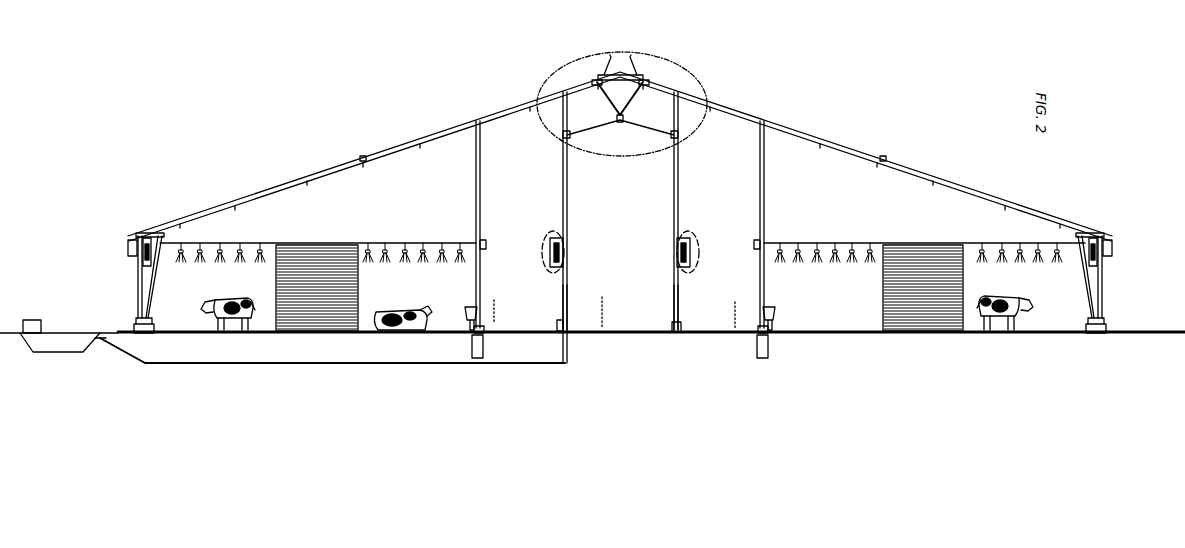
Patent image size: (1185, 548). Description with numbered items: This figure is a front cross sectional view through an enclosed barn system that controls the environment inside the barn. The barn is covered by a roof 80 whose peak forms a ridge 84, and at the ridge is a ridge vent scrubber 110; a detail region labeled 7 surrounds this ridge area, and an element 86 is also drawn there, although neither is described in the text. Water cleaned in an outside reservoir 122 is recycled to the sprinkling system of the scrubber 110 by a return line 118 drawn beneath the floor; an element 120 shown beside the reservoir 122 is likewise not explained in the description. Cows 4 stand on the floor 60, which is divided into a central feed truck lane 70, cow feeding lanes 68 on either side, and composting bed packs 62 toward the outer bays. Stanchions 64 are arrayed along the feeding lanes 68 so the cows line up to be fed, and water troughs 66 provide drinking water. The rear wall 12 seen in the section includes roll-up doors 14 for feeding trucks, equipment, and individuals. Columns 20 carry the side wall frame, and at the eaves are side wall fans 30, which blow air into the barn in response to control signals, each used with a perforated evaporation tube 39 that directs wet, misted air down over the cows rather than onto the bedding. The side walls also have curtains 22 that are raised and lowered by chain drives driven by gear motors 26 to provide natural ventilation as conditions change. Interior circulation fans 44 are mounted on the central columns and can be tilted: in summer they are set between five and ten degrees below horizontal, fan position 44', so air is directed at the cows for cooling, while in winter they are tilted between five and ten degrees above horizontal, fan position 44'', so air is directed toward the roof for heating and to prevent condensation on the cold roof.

The cows 4 is at (253, 333).
The detail region of ridge vent 7 is at (622, 104).
The rear wall 12 is at (368, 193).
The roll-up doors 14 is at (328, 317).
The columns 20 is at (562, 180).
The curtains 22 is at (132, 237).
The motors 26 is at (128, 245).
The side wall fans 30 is at (141, 258).
The evaporation tube 39 is at (390, 244).
The interior circulation fans 44 is at (607, 240).
The fan position 44' is at (622, 270).
The fan position 44'' is at (707, 220).
The floor 60 is at (401, 333).
The composting bed packs 62 is at (203, 332).
The stanchions 64 is at (568, 293).
The water troughs 66 is at (463, 317).
The cow feeding lanes 68 is at (625, 314).
The feed truck lane 70 is at (611, 312).
The roof 80 is at (440, 128).
The ridge 84 is at (620, 60).
The ridge cap 86 is at (633, 67).
The ridge vent scrubber 110 is at (637, 122).
The return line 118 is at (303, 364).
The water box 120 is at (34, 328).
The reservoir 122 is at (82, 340).